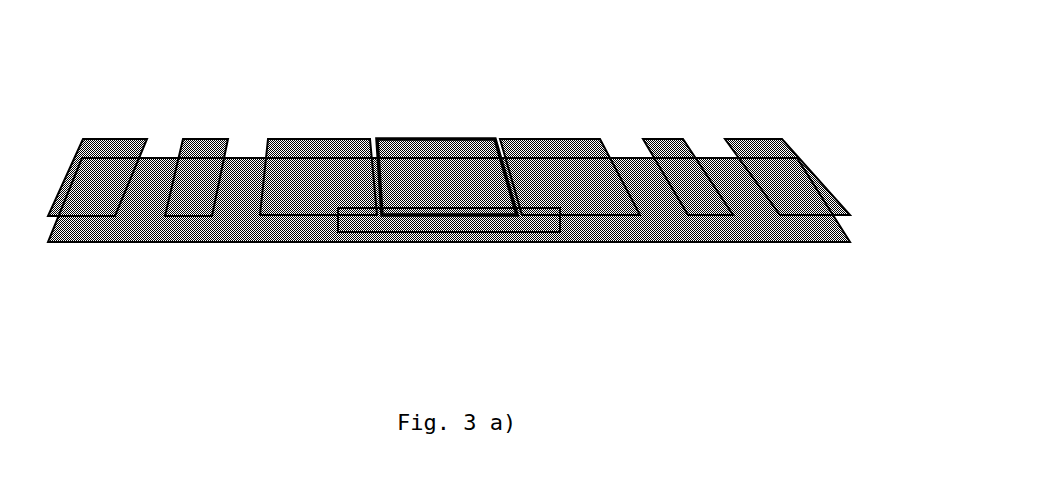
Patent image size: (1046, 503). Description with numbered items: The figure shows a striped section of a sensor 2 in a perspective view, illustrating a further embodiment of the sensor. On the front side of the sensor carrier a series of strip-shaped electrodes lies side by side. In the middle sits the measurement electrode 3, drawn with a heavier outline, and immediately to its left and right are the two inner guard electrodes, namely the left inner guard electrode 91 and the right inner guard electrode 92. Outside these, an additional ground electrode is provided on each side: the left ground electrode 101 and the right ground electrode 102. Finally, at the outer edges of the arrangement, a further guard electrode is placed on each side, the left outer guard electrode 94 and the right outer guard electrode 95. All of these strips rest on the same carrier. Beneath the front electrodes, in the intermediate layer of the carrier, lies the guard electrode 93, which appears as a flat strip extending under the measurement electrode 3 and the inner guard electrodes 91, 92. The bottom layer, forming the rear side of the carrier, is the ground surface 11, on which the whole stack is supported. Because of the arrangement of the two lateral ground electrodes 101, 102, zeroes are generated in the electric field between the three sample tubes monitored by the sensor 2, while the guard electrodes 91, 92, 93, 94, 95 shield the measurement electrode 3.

The sensor 2 is at (461, 182).
The measurement electrode 3 is at (422, 168).
The ground surface 11 is at (138, 223).
The left inner guard electrode 91 is at (317, 161).
The right inner guard electrode 92 is at (557, 162).
The guard electrode 93 is at (435, 234).
The left outer guard electrode 94 is at (112, 157).
The right outer guard electrode 95 is at (767, 156).
The left ground electrode 101 is at (199, 157).
The right ground electrode 102 is at (667, 156).